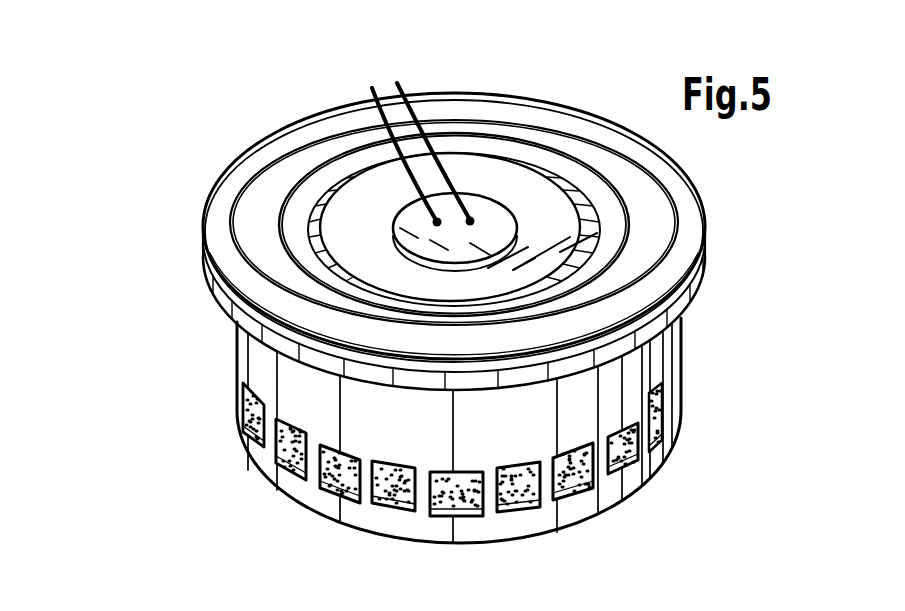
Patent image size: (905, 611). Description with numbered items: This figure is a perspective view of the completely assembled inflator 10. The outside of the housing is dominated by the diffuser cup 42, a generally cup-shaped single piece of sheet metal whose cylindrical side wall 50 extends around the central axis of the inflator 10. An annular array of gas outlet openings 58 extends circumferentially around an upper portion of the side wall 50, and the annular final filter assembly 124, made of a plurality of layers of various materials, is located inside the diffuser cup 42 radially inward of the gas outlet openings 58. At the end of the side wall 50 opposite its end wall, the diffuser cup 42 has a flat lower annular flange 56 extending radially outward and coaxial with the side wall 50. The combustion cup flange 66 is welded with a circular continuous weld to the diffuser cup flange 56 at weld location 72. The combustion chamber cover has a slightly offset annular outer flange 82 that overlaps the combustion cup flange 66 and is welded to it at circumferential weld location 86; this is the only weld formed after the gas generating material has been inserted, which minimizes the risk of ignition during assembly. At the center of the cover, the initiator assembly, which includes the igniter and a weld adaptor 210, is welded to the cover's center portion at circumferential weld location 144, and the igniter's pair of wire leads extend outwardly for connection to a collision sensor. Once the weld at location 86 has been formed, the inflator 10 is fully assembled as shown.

The inflator 10 is at (157, 243).
The diffuser cup 42 is at (235, 366).
The cylindrical side wall 50 is at (647, 377).
The annular flange 56 is at (687, 267).
The gas outlet openings 58 is at (325, 488).
The combustion cup flange 66 is at (657, 230).
The weld location 72 is at (240, 283).
The annular outer flange 82 is at (617, 207).
The weld location 86 is at (620, 285).
The final filter assembly 124 is at (525, 508).
The weld location 144 is at (535, 258).
The weld adaptor 210 is at (413, 214).